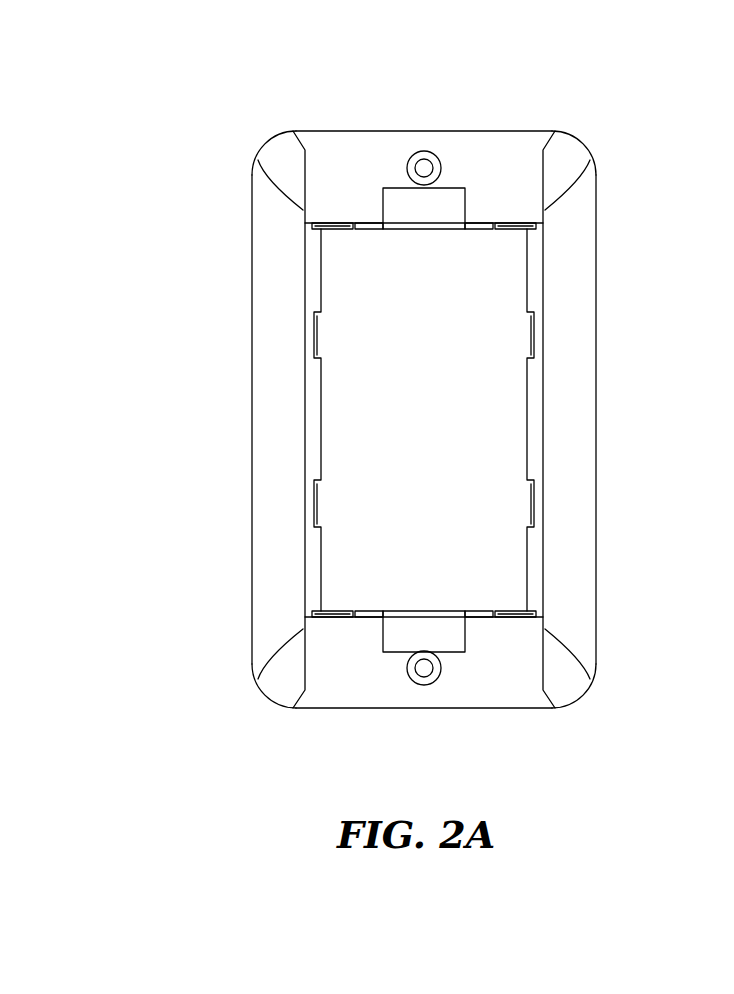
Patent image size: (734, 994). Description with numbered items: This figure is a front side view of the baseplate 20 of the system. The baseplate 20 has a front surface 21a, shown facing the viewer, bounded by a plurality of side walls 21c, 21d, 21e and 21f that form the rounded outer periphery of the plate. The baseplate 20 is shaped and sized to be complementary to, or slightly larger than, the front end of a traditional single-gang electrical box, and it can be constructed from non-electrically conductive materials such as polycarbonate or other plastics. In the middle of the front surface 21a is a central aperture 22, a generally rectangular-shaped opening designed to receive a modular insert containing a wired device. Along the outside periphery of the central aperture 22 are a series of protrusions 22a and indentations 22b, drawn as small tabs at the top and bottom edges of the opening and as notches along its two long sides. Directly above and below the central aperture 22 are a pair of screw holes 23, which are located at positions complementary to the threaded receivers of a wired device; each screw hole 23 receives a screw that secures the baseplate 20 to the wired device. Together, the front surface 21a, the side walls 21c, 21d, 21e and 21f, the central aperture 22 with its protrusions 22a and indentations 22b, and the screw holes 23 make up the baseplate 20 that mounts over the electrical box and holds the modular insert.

The baseplate 20 is at (243, 109).
The front surface 21a is at (502, 155).
The side wall 21c is at (597, 305).
The side wall 21d is at (252, 391).
The side wall 21e is at (345, 130).
The side wall 21f is at (470, 708).
The central aperture 22 is at (433, 440).
The protrusions 22a is at (480, 232).
The indentations 22b is at (336, 230).
The screw holes 23 is at (431, 152).